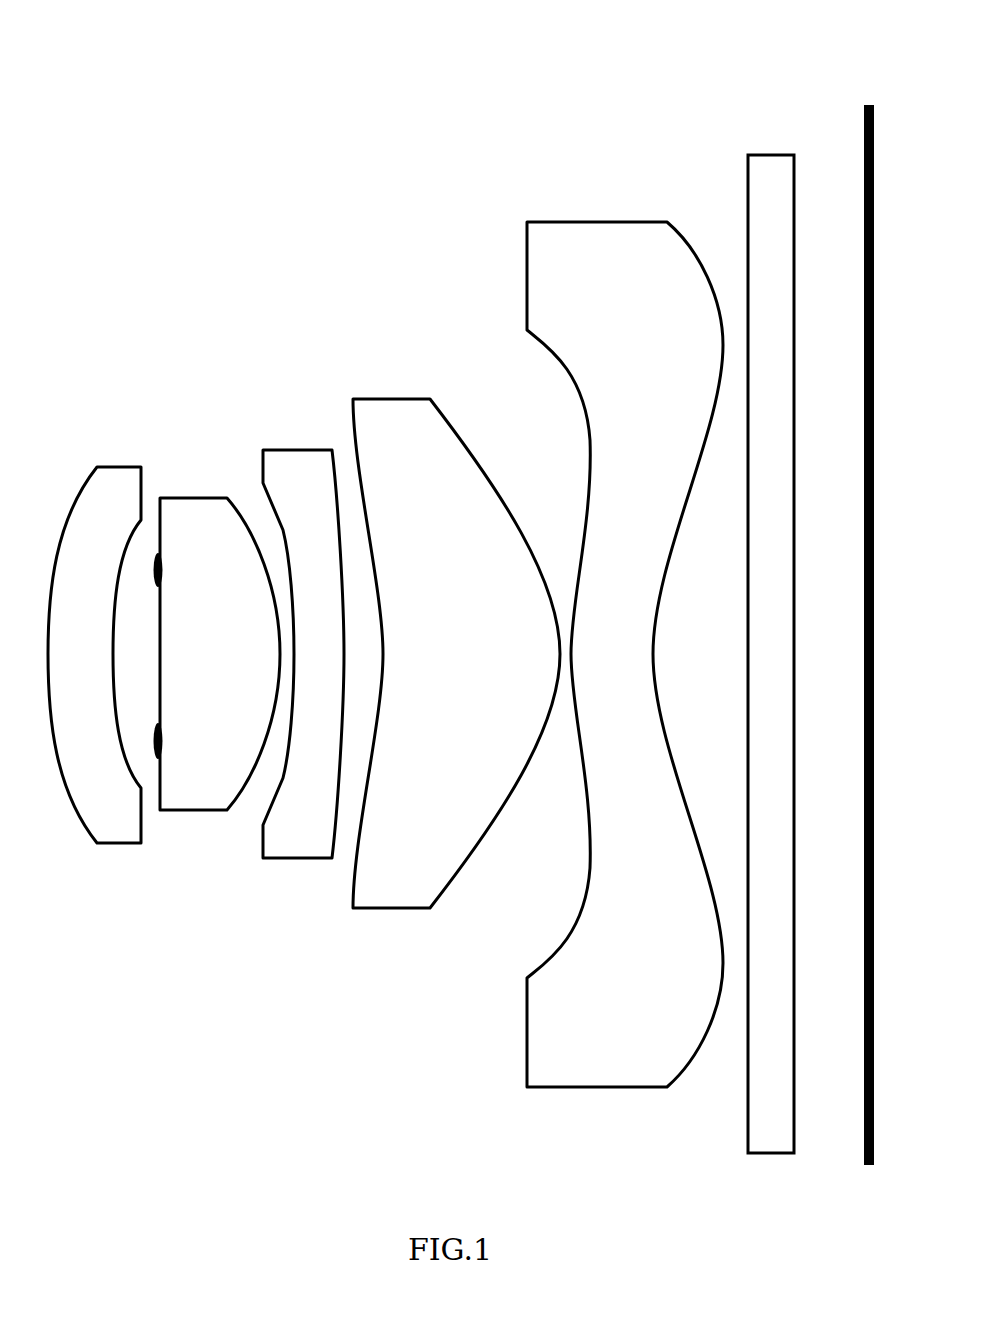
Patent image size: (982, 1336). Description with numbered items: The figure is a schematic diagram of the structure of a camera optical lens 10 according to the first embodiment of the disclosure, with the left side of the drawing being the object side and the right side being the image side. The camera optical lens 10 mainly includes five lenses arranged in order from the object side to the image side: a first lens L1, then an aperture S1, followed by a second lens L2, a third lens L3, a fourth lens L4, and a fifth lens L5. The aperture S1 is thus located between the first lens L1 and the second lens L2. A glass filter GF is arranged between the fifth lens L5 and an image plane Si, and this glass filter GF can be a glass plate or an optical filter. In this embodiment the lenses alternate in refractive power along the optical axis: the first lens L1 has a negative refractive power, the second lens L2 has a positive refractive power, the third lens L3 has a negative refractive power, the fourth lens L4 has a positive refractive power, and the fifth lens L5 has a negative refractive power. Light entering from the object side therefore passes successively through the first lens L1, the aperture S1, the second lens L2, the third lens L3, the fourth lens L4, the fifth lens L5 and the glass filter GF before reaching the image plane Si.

The camera optical lens 10 is at (435, 44).
The first lens L1 is at (94, 643).
The second lens L2 is at (220, 640).
The third lens L3 is at (303, 638).
The fourth lens L4 is at (456, 638).
The fifth lens L5 is at (625, 640).
The aperture S1 is at (155, 762).
The glass filter GF is at (771, 639).
The image plane Si is at (866, 621).